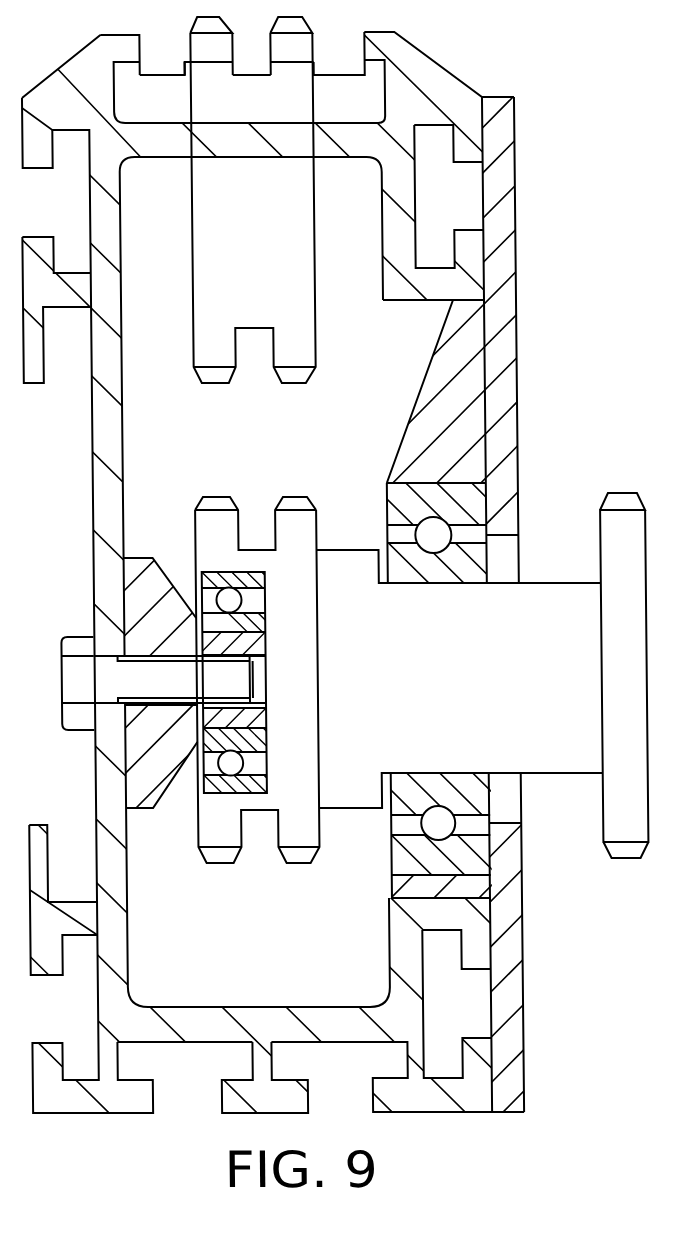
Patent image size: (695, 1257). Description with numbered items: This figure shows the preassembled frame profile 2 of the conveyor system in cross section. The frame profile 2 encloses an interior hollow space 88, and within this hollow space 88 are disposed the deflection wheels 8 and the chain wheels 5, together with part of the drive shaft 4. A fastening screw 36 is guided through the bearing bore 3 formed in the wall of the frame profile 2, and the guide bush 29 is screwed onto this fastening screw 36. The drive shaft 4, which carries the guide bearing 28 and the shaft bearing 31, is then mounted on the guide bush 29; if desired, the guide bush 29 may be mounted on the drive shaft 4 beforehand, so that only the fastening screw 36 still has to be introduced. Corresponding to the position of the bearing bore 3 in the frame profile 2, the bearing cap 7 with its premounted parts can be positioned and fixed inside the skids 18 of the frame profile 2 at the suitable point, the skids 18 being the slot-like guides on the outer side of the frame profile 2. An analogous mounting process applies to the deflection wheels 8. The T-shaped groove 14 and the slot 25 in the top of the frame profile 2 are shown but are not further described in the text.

The frame profile 2 is at (96, 448).
The bearing bore 3 is at (103, 706).
The drive shaft 4 is at (555, 757).
The chain wheels 5 is at (278, 500).
The bearing cap 7 is at (481, 327).
The deflection wheels 8 is at (300, 345).
The T-slot 14 is at (152, 97).
The skids 18 is at (536, 980).
The slot 25 is at (322, 75).
The guide bearing 28 is at (205, 790).
The guide bush 29 is at (143, 585).
The shaft bearing 31 is at (464, 502).
The fastening screw 36 is at (72, 643).
The interior hollow space 88 is at (180, 436).